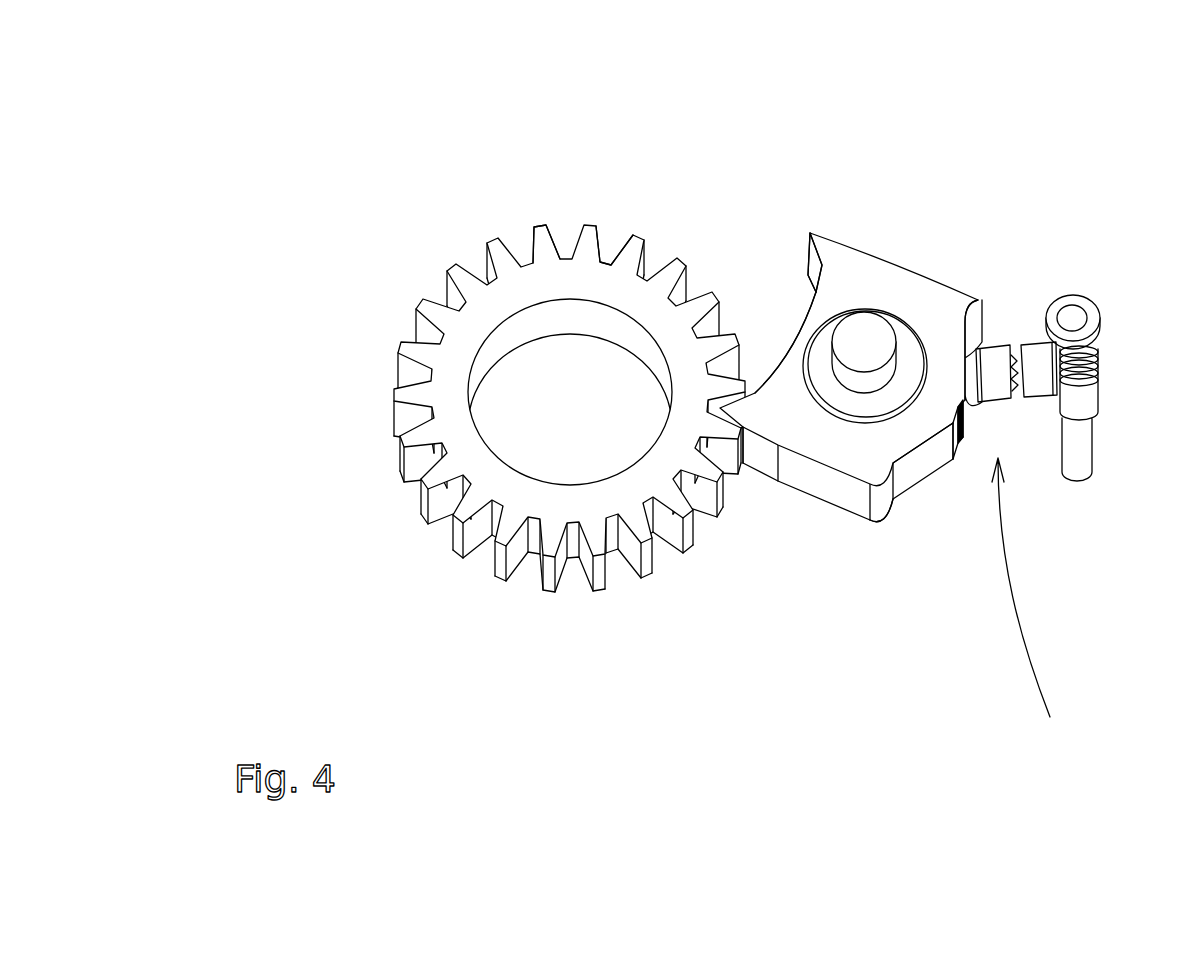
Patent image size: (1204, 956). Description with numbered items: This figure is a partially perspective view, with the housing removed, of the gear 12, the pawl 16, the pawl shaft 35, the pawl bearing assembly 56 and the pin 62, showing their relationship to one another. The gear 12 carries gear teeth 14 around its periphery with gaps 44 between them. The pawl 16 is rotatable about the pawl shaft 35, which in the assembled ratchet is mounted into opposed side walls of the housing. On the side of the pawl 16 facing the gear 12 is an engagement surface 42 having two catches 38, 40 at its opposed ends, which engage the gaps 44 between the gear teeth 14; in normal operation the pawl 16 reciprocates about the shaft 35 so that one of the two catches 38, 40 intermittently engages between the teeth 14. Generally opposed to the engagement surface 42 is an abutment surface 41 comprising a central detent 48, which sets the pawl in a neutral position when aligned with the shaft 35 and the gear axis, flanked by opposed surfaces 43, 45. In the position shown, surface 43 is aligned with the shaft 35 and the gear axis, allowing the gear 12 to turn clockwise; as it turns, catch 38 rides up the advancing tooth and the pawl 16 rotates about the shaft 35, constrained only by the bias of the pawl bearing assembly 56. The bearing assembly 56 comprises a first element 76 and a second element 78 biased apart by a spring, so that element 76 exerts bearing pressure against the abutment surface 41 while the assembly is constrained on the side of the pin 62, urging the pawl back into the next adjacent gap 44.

The gear 12 is at (483, 302).
The gear teeth 14 is at (546, 228).
The gaps between the gear teeth 44 is at (608, 262).
The pawl 16 is at (813, 435).
The engagement surface 42 is at (780, 360).
The catch 40 is at (807, 237).
The pawl shaft 35 is at (863, 340).
The opposed surface 43 is at (973, 322).
The first element 76 is at (998, 353).
The second element 78 is at (1030, 352).
The pin 62 is at (1076, 458).
The catch 38 is at (745, 462).
The abutment surface 41 is at (913, 487).
The opposed surface 45 is at (935, 457).
The central detent 48 is at (958, 453).
The pawl bearing assembly 56 is at (1035, 606).